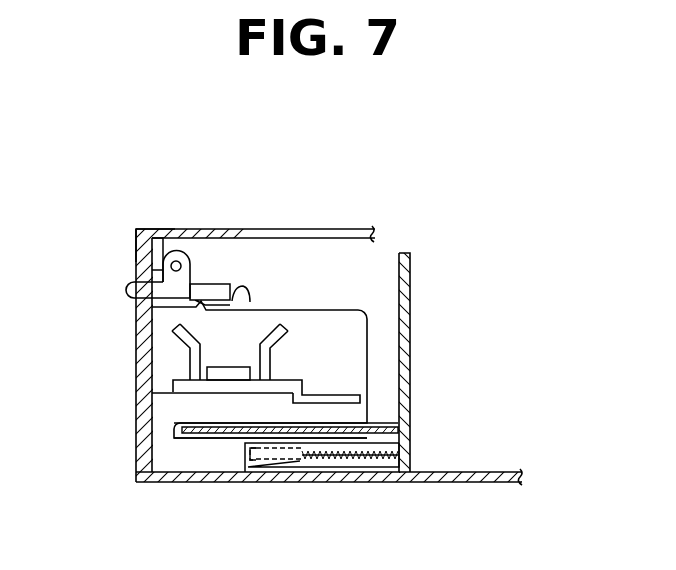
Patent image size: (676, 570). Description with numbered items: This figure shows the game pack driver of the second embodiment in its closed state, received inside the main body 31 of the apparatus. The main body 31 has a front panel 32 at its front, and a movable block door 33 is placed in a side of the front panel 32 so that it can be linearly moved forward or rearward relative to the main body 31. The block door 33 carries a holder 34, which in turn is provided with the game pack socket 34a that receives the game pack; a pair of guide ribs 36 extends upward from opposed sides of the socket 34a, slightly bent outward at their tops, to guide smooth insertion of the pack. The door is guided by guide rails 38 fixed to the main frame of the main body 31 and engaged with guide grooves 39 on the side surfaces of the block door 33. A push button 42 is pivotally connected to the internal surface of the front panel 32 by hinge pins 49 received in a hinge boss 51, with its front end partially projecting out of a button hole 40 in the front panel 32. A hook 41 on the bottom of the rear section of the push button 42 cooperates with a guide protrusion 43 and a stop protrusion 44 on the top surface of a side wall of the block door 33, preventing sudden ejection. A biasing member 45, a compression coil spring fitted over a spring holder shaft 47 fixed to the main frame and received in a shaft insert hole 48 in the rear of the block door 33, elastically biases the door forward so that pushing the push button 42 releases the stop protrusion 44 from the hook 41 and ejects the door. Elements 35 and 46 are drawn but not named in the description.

The main body 31 is at (136, 229).
The front panel 32 is at (220, 230).
The block door 33 is at (142, 388).
The holder 34 is at (168, 392).
The game pack socket 34a is at (228, 377).
The tray 35 is at (345, 394).
The guide ribs 36 is at (172, 333).
The guide rails 38 is at (207, 433).
The guide grooves 39 is at (173, 438).
The button hole 40 is at (143, 262).
The hook 41 is at (200, 290).
The push button 42 is at (130, 288).
The guide protrusion 43 is at (205, 308).
The stop protrusion 44 is at (240, 304).
The biasing member 45 is at (338, 463).
The rear wall 46 is at (410, 296).
The spring holder shaft 47 is at (385, 483).
The shaft insert hole 48 is at (250, 455).
The hinge pins 49 is at (180, 253).
The hinge boss 51 is at (155, 240).